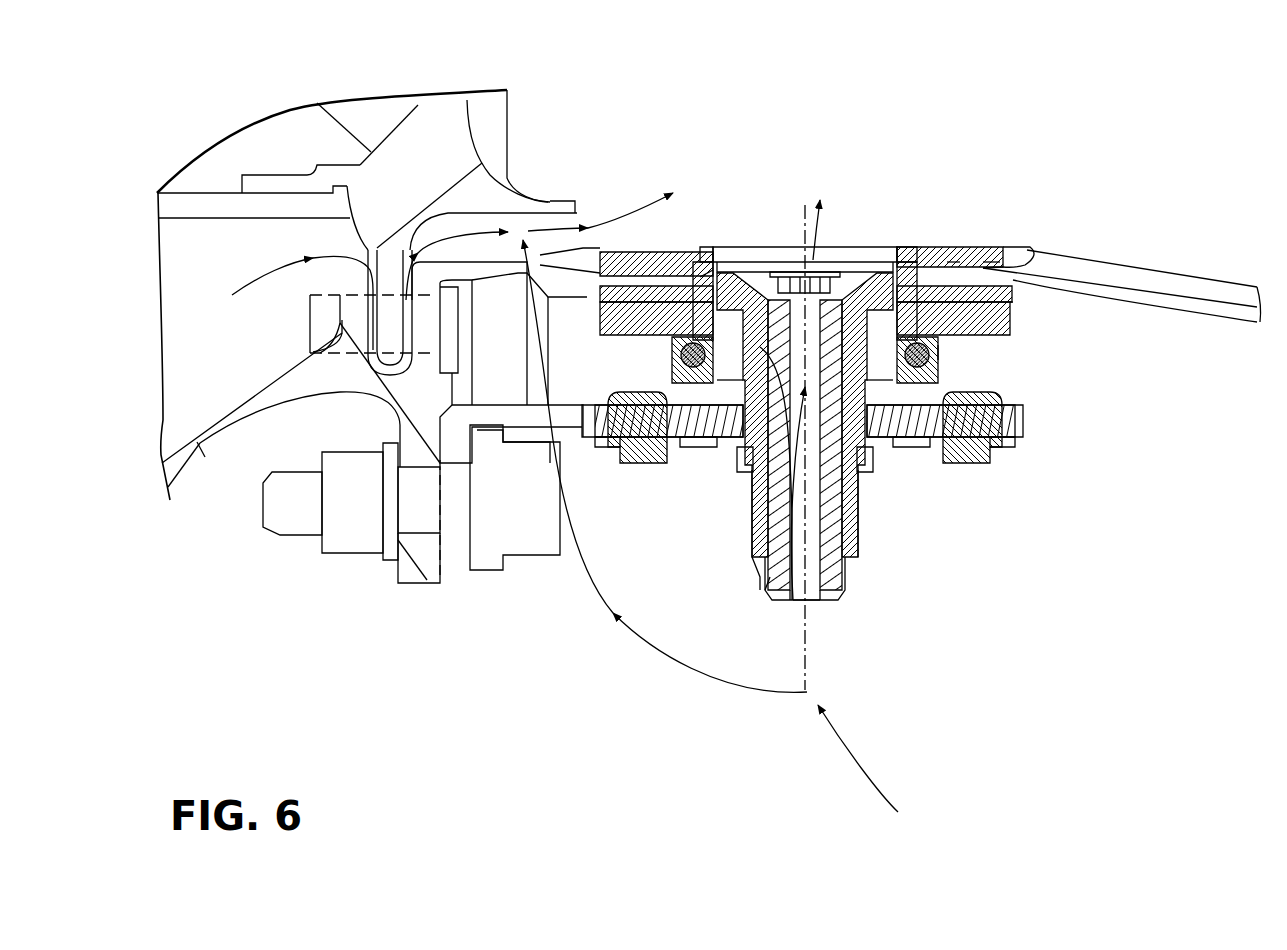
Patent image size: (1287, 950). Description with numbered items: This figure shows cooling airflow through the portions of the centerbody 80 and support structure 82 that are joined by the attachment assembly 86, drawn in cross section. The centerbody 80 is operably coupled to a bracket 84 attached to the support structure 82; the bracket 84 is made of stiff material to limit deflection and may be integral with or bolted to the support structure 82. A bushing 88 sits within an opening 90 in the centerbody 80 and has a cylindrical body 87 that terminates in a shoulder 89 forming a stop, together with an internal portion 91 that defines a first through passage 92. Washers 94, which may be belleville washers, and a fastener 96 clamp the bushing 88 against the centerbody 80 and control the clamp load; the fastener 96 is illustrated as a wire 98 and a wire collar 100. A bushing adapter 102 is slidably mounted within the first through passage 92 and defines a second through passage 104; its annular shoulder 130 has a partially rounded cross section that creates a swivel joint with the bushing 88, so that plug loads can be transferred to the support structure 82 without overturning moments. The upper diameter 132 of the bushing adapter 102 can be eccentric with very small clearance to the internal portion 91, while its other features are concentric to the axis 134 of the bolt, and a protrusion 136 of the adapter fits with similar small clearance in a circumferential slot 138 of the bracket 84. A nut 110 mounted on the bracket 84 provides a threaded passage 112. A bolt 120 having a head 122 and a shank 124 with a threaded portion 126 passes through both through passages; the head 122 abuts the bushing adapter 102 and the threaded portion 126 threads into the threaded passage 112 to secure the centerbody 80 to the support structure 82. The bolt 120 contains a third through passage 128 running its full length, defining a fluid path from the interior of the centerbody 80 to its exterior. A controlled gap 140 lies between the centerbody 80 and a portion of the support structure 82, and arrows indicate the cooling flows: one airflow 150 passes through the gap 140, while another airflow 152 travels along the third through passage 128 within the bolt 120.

The centerbody 80 is at (1197, 273).
The support structure 82 is at (467, 265).
The bracket 84 is at (590, 560).
The attachment assembly 86 is at (900, 243).
The cylindrical body 87 is at (945, 350).
The bushing 88 is at (983, 260).
The shoulder 89 is at (988, 277).
The opening 90 is at (700, 277).
The internal portion 91 is at (735, 343).
The first through passage 92 is at (850, 275).
The washer 94 is at (1017, 315).
The fastener 96 is at (932, 360).
The wire 98 is at (957, 437).
The wire collar 100 is at (977, 395).
The bushing adapter 102 is at (750, 290).
The second through passage 104 is at (810, 520).
The nut 110 is at (870, 505).
The threaded passage 112 is at (763, 577).
The bolt 120 is at (760, 577).
The head 122 is at (855, 262).
The shank 124 is at (947, 260).
The threaded portion 126 is at (845, 563).
The third through passage 128 is at (793, 600).
The annular shoulder 130 is at (657, 277).
The upper diameter 132 is at (908, 300).
The axis 134 is at (805, 220).
The protrusion 136 is at (745, 500).
The circumferential slot 138 is at (745, 500).
The controlled gap 140 is at (525, 275).
The airflow 150 is at (752, 500).
The airflow 152 is at (862, 482).